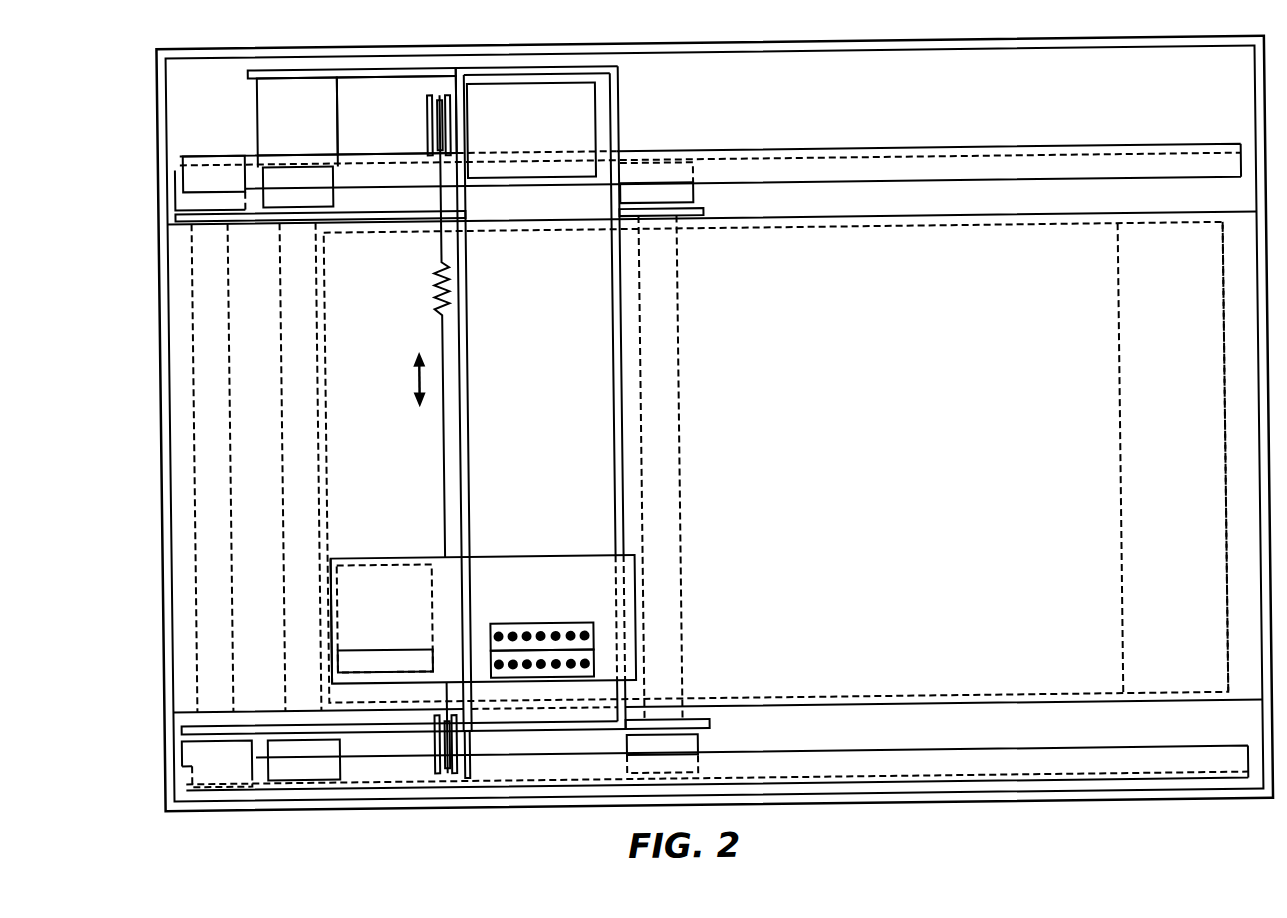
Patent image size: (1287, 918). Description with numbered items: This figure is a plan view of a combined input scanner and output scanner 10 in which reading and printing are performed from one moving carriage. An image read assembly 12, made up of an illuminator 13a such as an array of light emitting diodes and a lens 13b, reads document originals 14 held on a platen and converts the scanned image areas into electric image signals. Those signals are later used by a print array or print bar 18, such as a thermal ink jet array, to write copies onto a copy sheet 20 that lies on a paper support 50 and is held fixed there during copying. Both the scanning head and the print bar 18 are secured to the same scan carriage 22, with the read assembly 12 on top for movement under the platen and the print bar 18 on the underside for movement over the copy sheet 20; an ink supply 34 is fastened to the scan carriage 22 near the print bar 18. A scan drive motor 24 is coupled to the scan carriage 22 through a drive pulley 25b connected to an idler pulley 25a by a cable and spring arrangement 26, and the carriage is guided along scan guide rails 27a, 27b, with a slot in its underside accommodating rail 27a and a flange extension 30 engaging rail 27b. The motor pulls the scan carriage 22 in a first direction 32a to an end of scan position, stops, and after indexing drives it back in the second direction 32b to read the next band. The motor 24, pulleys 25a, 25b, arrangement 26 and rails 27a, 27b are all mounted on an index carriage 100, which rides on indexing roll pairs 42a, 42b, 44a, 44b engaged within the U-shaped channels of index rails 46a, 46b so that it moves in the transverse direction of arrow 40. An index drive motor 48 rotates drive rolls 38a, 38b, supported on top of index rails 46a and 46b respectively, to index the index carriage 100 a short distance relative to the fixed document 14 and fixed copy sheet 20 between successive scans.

The index carriage 100 is at (544, 316).
The combined input scanner and output scanner 10 is at (493, 592).
The image read assembly 12 is at (561, 591).
The illuminator 13a is at (590, 634).
The lens 13b is at (590, 662).
The document original 14 is at (1223, 621).
The print array or print bar 18 is at (367, 644).
The copy sheet 20 is at (1120, 317).
The scan carriage 22 is at (328, 613).
The scan drive motor 24 is at (576, 135).
The idler pulley 25a is at (428, 741).
The drive pulley 25b is at (431, 126).
The cable and spring arrangement 26 is at (431, 291).
The scan guide rail 27a is at (461, 494).
The scan guide rail 27b is at (621, 476).
The flange extension 30 is at (633, 577).
The first direction 32a is at (416, 396).
The second direction 32b is at (415, 367).
The ink supply 34 is at (386, 551).
The drive roll 38a is at (298, 745).
The drive roll 38b is at (296, 192).
The transverse direction arrow 40 is at (688, 377).
The indexing roll pair 42a is at (193, 750).
The indexing roll pair 42b is at (198, 191).
The indexing roll pair 44a is at (694, 745).
The indexing roll pair 44b is at (660, 189).
The index rail 46a is at (1026, 754).
The index rail 46b is at (1031, 149).
The index drive motor 48 is at (258, 122).
The paper support 50 is at (1026, 479).